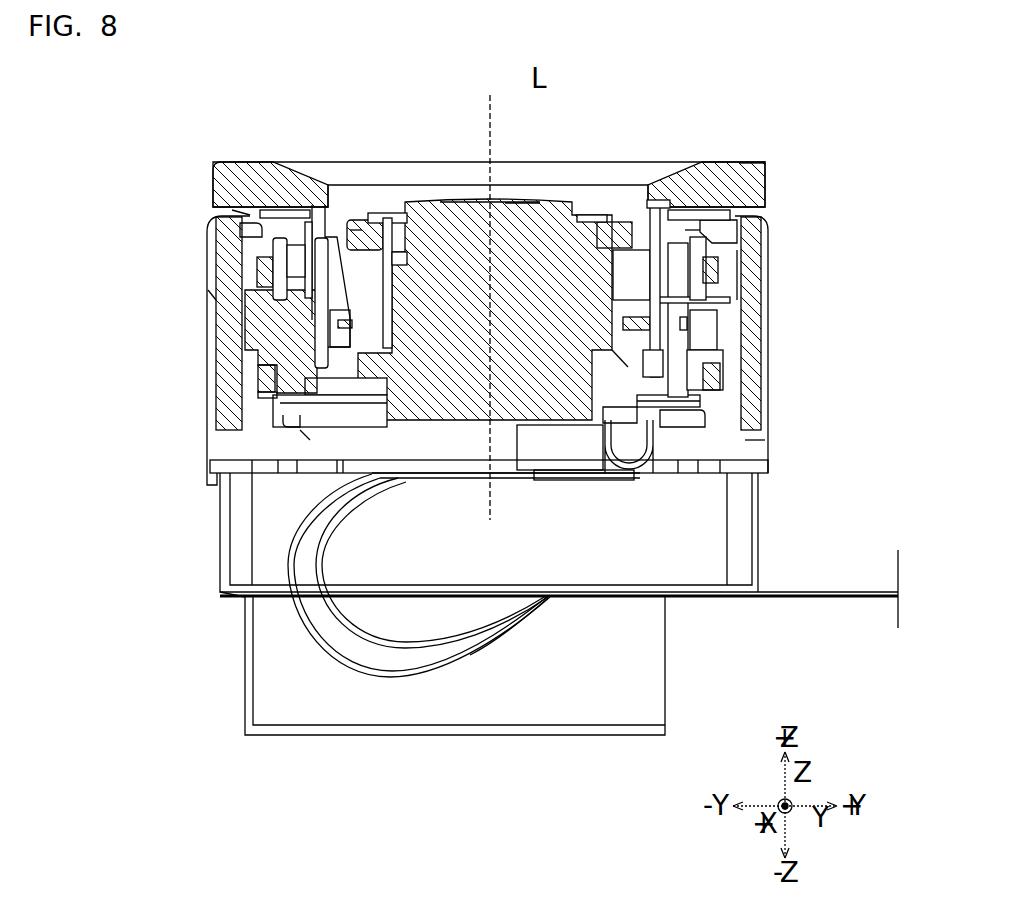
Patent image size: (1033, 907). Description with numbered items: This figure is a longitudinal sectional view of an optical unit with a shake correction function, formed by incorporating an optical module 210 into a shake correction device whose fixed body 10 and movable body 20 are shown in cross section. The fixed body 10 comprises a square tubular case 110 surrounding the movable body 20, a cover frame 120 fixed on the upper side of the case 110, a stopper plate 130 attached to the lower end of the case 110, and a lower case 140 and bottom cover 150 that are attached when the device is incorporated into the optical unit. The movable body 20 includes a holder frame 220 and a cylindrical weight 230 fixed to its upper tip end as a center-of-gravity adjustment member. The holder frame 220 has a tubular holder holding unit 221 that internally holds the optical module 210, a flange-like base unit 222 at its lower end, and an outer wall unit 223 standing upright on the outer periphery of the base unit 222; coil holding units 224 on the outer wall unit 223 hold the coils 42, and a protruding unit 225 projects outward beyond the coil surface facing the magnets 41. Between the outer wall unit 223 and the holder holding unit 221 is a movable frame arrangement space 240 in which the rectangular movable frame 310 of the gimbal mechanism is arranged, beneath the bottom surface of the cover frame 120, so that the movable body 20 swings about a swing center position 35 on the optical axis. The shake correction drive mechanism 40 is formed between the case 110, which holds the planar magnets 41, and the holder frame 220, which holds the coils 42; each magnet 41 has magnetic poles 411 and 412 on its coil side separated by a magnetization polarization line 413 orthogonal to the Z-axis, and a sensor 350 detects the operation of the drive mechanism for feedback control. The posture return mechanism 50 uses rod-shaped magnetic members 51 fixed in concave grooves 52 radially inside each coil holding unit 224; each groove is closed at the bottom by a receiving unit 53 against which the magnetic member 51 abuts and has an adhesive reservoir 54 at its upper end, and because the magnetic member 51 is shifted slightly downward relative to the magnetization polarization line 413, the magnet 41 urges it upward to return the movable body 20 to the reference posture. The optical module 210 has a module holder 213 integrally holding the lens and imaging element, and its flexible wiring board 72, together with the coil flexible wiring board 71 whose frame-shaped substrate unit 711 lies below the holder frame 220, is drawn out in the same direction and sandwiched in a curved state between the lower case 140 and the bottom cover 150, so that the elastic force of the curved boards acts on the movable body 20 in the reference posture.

The fixed body 10 is at (222, 597).
The movable body 20 is at (716, 432).
The swing center position 35 is at (490, 325).
The shake correction drive mechanism 40 is at (127, 283).
The magnet 41 is at (273, 270).
The coil 42 is at (250, 265).
The posture return mechanism 50 is at (842, 250).
The magnetic member 51 is at (322, 238).
The concave groove 52 is at (385, 440).
The receiving unit 53 is at (327, 407).
The adhesive reservoir 54 is at (290, 210).
The flexible wiring board 71 is at (320, 563).
The flexible wiring board 72 is at (450, 658).
The case 110 is at (207, 418).
The cover frame 120 is at (218, 162).
The stopper plate 130 is at (220, 556).
The lower case 140 is at (352, 735).
The bottom cover 150 is at (262, 466).
The optical module 210 is at (522, 200).
The module holder 213 is at (466, 240).
The holder frame 220 is at (232, 210).
The holder holding unit 221 is at (388, 250).
The base unit 222 is at (307, 440).
The outer wall unit 223 is at (694, 230).
The coil holding unit 224 is at (258, 370).
The protruding unit 225 is at (216, 296).
The weight 230 is at (356, 230).
The movable frame arrangement space 240 is at (402, 300).
The movable frame 310 is at (370, 310).
The sensor 350 is at (723, 355).
The magnetic pole 411 is at (752, 170).
The magnetic pole 412 is at (752, 440).
The magnetization polarization line 413 is at (216, 320).
The frame-shaped substrate unit 711 is at (648, 470).